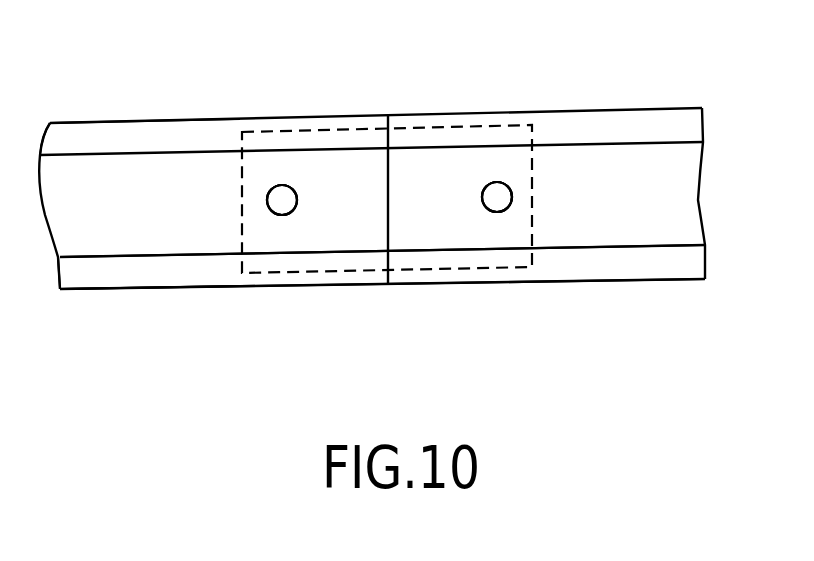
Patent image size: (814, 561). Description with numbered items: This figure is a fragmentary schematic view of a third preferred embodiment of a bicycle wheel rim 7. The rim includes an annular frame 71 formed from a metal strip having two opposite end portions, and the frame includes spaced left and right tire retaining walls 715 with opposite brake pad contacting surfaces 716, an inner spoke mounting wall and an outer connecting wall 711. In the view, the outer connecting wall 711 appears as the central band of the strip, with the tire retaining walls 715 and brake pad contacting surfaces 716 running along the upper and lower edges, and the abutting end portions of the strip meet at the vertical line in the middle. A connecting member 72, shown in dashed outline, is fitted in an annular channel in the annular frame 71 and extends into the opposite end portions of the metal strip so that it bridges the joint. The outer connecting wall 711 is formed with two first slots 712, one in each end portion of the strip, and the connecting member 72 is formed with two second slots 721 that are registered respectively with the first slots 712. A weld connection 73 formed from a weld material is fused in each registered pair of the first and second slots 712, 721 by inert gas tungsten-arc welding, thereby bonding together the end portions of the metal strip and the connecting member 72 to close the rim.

The bicycle wheel rim 7 is at (416, 199).
The annular frame 71 is at (620, 255).
The outer connecting wall 711 is at (663, 190).
The first slot 712 is at (288, 213).
The second slot 721 is at (389, 287).
The tire retaining wall 715 is at (90, 137).
The brake pad contacting surface 716 is at (162, 120).
The connecting member 72 is at (533, 183).
The weld connection 73 is at (283, 203).